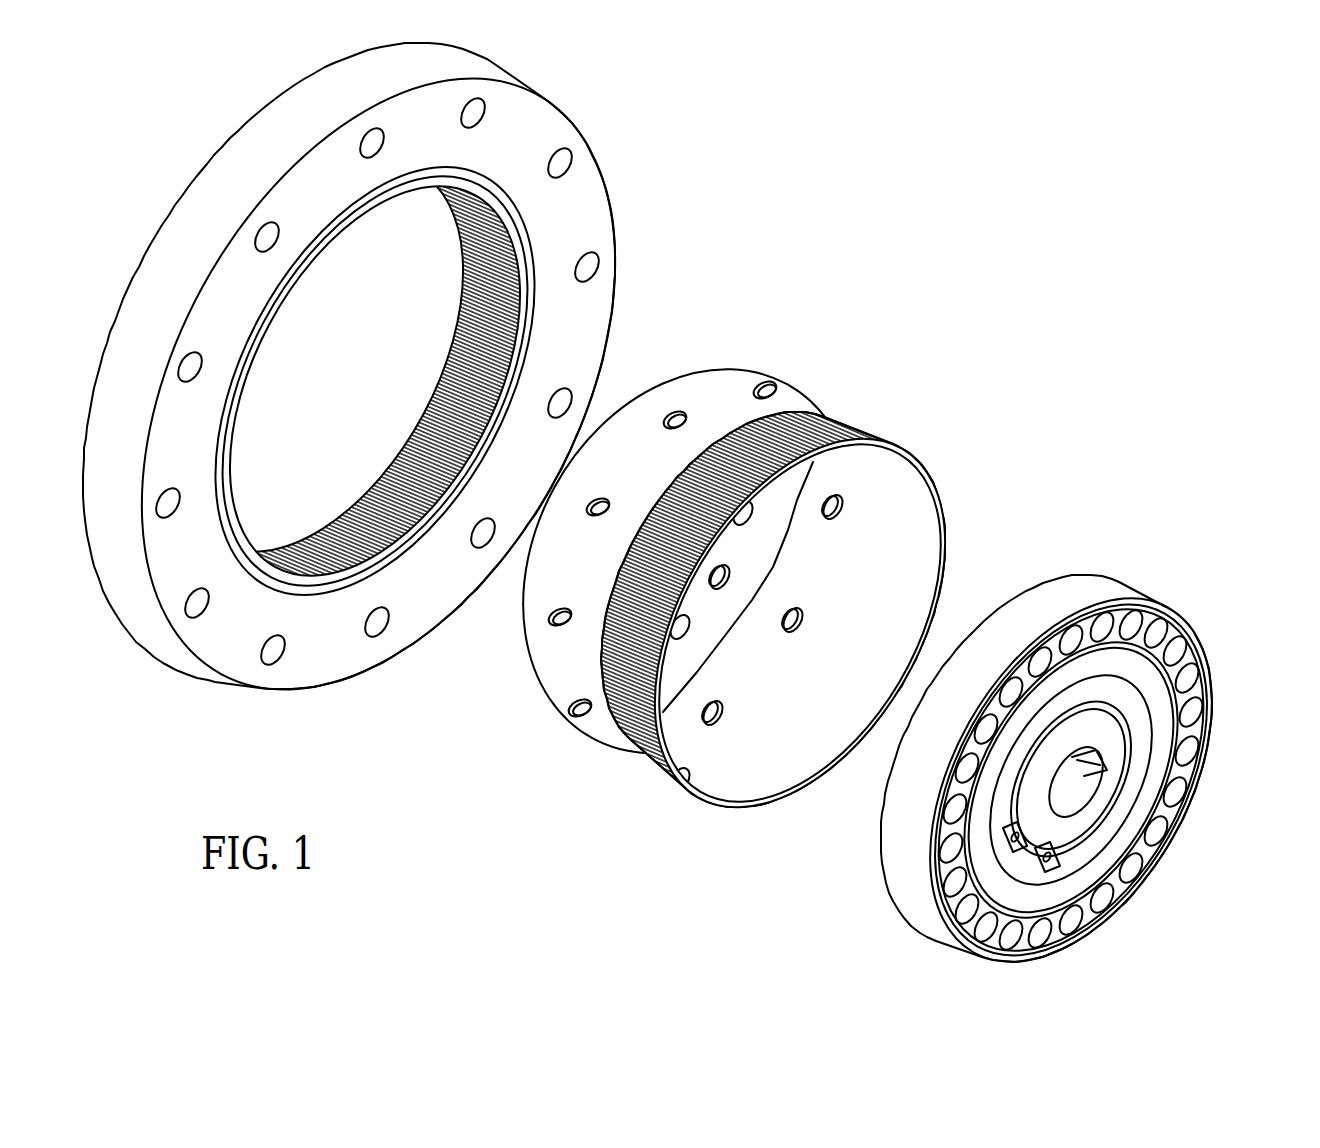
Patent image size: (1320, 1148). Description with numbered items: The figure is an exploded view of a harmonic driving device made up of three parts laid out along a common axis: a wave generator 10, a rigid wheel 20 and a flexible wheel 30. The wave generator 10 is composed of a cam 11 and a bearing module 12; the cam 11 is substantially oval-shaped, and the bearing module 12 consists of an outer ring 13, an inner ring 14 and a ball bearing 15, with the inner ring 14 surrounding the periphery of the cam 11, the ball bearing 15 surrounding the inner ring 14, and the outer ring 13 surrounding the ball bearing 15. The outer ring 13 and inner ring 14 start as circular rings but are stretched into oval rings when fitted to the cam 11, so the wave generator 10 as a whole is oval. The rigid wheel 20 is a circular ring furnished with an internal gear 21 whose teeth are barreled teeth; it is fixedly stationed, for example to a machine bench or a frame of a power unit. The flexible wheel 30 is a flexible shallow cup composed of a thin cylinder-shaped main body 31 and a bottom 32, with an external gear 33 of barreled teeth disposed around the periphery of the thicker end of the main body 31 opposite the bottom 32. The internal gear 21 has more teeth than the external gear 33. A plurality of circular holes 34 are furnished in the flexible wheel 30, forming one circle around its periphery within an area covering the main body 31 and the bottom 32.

The wave generator 10 is at (1096, 755).
The cam 11 is at (1120, 828).
The bearing module 12 is at (1099, 780).
The outer ring 13 is at (1205, 682).
The inner ring 14 is at (1275, 645).
The ball bearing 15 is at (1203, 713).
The rigid wheel 20 is at (378, 385).
The internal gear 21 is at (462, 433).
The flexible wheel 30 is at (731, 584).
The main body 31 is at (553, 663).
The bottom 32 is at (767, 558).
The external gear 33 is at (632, 703).
The holes 34 is at (672, 412).